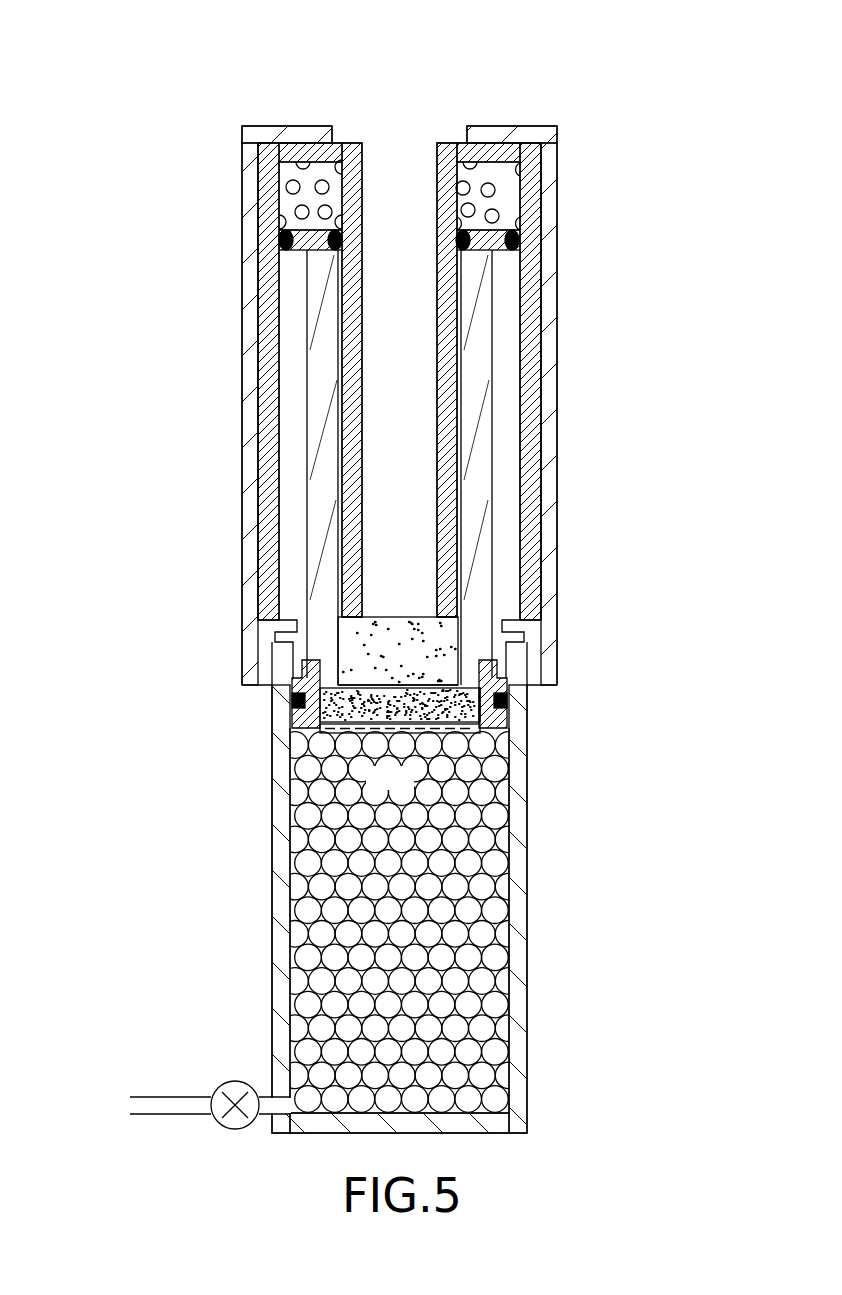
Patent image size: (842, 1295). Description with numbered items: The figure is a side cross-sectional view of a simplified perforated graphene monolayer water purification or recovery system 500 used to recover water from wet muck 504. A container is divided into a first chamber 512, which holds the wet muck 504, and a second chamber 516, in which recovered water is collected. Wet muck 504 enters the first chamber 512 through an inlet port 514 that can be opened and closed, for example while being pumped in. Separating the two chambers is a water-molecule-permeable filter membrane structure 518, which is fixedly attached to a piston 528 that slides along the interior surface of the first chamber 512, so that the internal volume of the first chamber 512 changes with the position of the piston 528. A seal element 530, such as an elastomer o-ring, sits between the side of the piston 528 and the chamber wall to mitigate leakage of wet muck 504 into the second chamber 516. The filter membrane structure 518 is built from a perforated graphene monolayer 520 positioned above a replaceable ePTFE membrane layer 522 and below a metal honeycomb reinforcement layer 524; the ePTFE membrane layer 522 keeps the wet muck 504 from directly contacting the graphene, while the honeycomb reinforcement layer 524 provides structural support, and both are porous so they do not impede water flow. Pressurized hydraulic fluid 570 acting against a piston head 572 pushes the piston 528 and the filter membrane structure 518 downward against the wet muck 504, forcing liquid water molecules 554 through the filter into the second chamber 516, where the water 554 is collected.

The perforated graphene monolayer water purification or recovery system 500 is at (296, 92).
The wet muck 504 is at (383, 880).
The first chamber 512 is at (538, 1130).
The inlet port 514 is at (235, 1129).
The second chamber 516 is at (575, 131).
The filter membrane structure 518 is at (390, 777).
The perforated graphene monolayer 520 is at (478, 711).
The replaceable ePTFE membrane layer 522 is at (500, 735).
The metal honeycomb reinforcement layer 524 is at (430, 692).
The piston 528 is at (305, 690).
The seal element 530 is at (296, 703).
The liquid water molecules 554 is at (382, 656).
The pressurized hydraulic fluid 570 is at (489, 200).
The piston head 572 is at (287, 240).